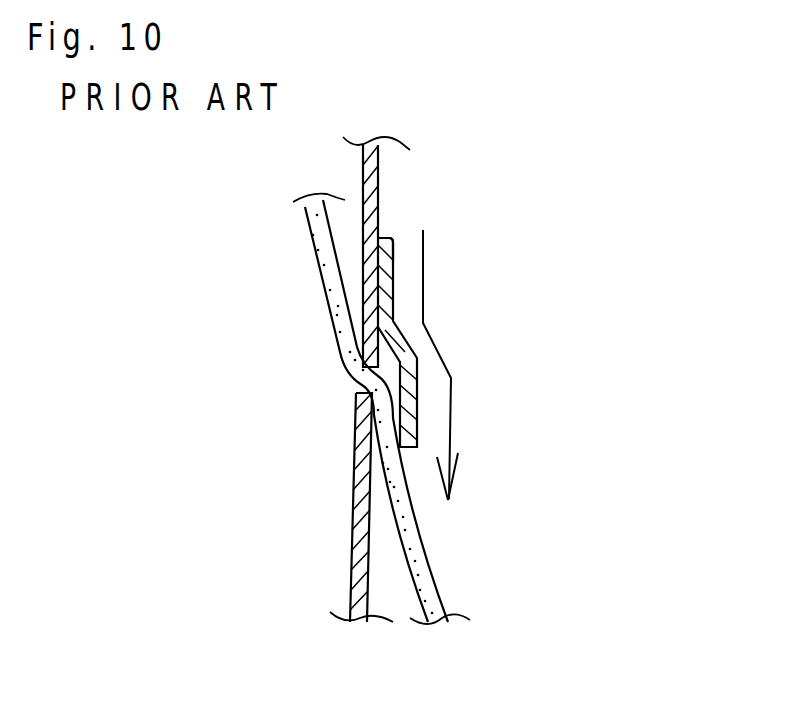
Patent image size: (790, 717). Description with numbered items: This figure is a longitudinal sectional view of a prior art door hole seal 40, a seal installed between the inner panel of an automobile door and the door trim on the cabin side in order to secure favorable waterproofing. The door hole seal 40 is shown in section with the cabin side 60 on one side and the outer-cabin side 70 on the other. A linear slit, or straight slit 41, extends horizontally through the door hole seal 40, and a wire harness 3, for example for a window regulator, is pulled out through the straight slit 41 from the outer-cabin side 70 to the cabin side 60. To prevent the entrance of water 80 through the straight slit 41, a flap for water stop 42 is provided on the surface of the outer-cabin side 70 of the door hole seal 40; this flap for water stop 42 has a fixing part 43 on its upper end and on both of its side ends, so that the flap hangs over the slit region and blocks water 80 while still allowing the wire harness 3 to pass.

The wire harness 3 is at (316, 253).
The door hole seal 40 is at (388, 335).
The linear slit (straight slit) 41 is at (354, 392).
The flap for water stop 42 is at (394, 252).
The fixing part 43 is at (388, 238).
The cabin side 60 is at (205, 412).
The outer-cabin side 70 is at (573, 417).
The water 80 is at (423, 278).